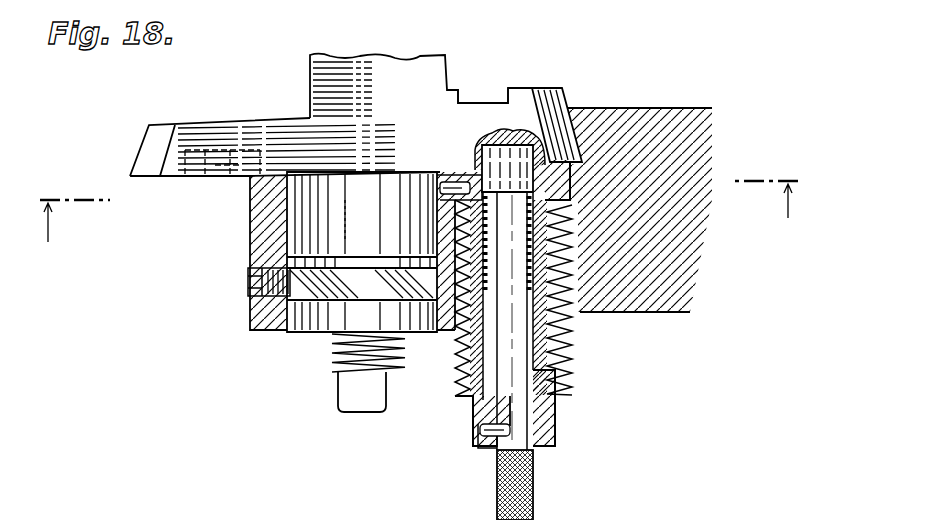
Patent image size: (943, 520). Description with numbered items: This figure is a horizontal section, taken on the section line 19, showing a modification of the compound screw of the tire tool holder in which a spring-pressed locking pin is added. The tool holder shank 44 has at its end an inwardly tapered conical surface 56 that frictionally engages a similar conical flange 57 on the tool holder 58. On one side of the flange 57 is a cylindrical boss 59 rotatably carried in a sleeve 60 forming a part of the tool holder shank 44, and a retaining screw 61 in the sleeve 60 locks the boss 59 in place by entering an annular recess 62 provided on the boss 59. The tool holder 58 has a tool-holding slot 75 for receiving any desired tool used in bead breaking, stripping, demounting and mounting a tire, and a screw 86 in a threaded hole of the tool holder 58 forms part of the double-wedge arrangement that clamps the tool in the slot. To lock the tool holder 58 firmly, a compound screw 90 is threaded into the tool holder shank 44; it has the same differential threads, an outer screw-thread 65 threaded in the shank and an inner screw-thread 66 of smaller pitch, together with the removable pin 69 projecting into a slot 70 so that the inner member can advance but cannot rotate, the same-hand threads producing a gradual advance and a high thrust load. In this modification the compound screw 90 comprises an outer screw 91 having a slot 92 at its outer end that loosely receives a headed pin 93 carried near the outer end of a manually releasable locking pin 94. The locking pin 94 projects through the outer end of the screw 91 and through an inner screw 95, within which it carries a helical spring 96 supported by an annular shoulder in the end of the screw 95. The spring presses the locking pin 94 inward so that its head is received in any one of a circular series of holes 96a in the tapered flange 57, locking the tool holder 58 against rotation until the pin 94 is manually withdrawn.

The section line 19- 19 is at (416, 222).
The tool holder shank 44 is at (680, 260).
The inwardly tapered conical surface 56 is at (585, 150).
The conical flange 57 is at (200, 140).
The tool holder 58 is at (345, 75).
The cylindrical boss 59 is at (300, 334).
The sleeve 60 is at (258, 210).
The retaining screw 61 is at (250, 278).
The annular recess 62 is at (428, 250).
The outer screw-thread 65 is at (562, 282).
The inner screw-thread 66 is at (562, 342).
The removable pin 69 is at (453, 182).
The slot 70 is at (440, 176).
The tool-holding slot 75 is at (478, 100).
The screw 86 is at (352, 360).
The compound screw 90 is at (543, 332).
The outer screw 91 is at (540, 410).
The slot 92 is at (478, 440).
The headed pin 93 is at (480, 428).
The manually releasable locking pin 94 is at (498, 484).
The inner screw 95 is at (560, 183).
The helical spring 96 is at (556, 236).
The circular series of holes 96a is at (520, 126).